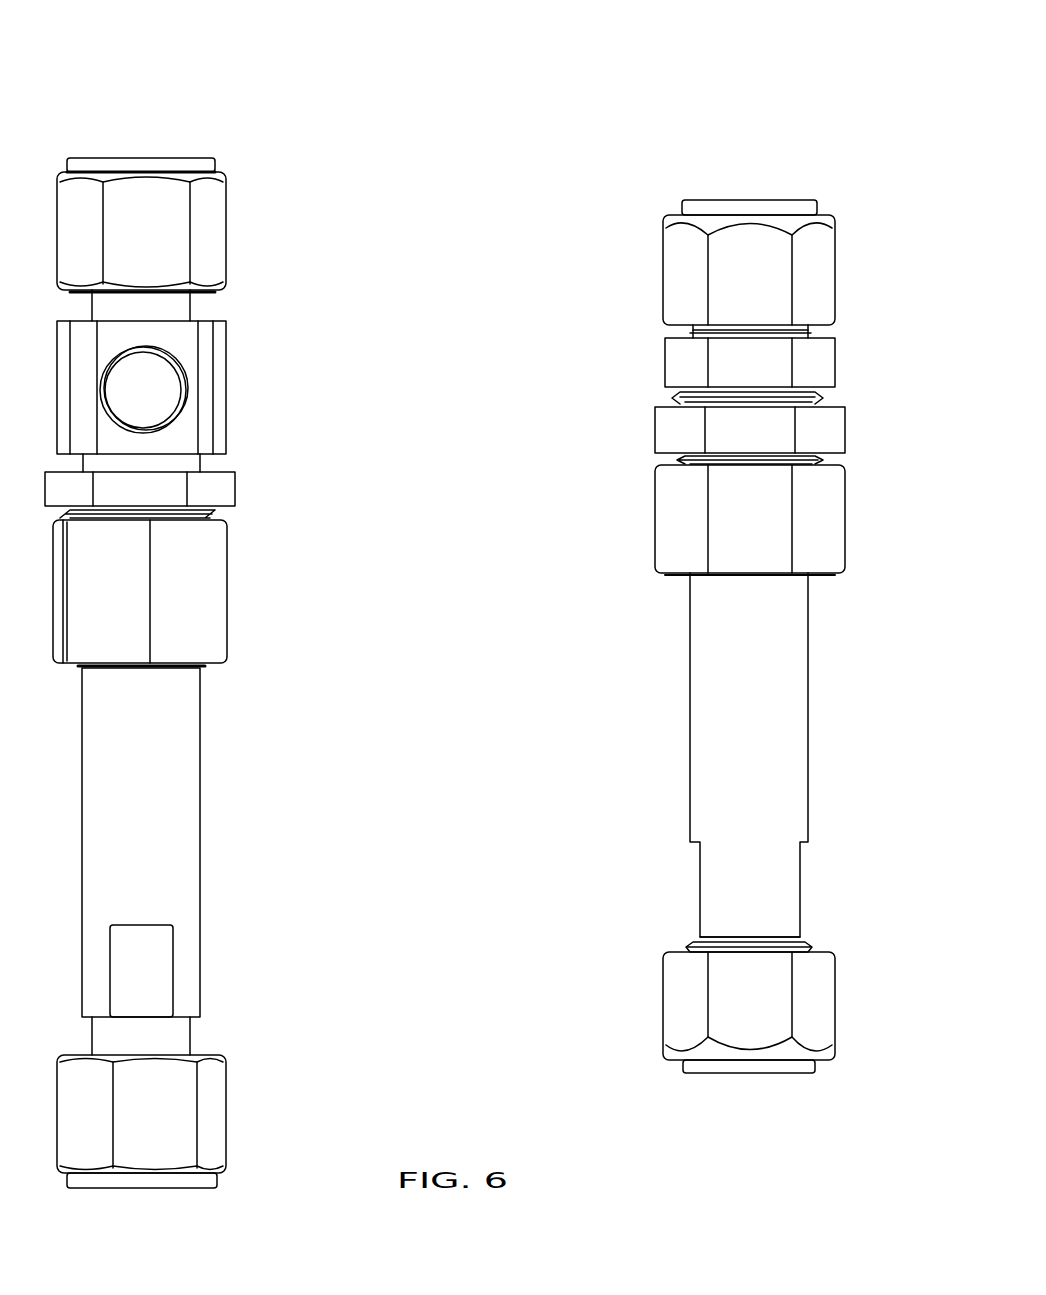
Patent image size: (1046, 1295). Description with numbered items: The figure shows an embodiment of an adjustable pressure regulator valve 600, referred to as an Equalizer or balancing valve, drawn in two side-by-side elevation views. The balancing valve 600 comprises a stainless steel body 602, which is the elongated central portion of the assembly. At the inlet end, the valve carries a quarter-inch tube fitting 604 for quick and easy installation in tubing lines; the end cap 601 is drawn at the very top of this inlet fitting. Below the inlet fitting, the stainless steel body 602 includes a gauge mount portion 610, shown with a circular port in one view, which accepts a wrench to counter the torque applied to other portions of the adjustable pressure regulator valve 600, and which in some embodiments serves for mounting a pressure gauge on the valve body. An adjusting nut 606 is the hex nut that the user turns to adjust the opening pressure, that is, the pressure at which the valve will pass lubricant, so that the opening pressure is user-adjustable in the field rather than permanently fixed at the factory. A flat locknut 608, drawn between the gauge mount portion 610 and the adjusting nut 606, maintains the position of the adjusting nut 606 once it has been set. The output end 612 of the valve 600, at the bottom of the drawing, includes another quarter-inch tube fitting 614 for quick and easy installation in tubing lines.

The adjustable pressure regulator valve 600 is at (340, 74).
The end cap 601 is at (165, 158).
The tube fitting 604 is at (226, 243).
The gauge mount portion 610 is at (228, 395).
The locknut 608 is at (236, 490).
The adjusting nut 606 is at (228, 610).
The stainless steel body 602 is at (200, 828).
The tube fitting 614 is at (226, 1085).
The output end 612 is at (147, 1190).